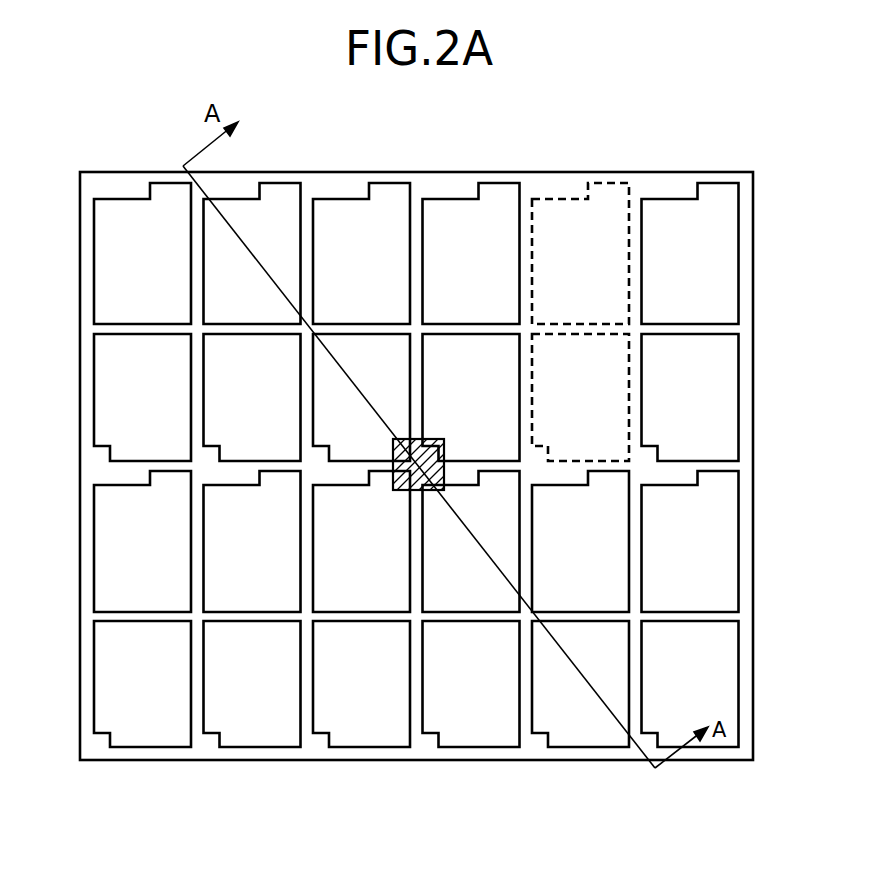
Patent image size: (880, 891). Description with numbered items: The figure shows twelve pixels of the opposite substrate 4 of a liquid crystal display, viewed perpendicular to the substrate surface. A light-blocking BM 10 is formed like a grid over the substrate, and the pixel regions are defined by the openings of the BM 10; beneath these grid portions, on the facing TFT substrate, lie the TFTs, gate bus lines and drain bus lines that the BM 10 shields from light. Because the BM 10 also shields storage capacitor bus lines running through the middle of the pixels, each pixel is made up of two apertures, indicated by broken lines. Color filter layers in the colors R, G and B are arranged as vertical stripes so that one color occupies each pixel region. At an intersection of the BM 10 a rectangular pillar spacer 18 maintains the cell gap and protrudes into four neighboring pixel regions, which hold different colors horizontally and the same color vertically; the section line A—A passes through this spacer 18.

The opposite substrate 4 is at (56, 319).
The BM 10 is at (325, 183).
The pillar spacer 18 is at (400, 491).